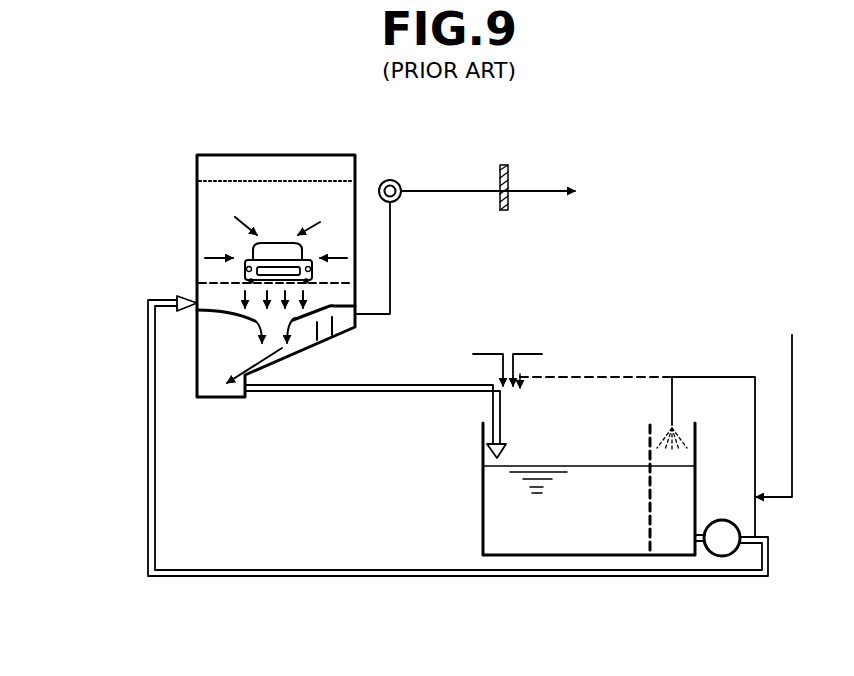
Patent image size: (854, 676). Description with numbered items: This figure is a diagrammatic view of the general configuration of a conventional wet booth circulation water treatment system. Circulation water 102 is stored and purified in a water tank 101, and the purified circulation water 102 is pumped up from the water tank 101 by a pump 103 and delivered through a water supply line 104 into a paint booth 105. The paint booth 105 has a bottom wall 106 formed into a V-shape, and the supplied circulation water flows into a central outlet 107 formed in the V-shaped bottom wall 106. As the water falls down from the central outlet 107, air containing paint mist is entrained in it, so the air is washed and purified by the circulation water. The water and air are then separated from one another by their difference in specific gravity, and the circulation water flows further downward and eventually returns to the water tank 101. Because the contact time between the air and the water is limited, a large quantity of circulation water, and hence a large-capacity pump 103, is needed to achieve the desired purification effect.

The water tank 101 is at (585, 555).
The water 102 is at (575, 492).
The pump 103 is at (720, 556).
The water supply line 104 is at (262, 570).
The paint booth 105 is at (197, 230).
The bottom wall 106 is at (227, 310).
The central outlet 107 is at (257, 328).